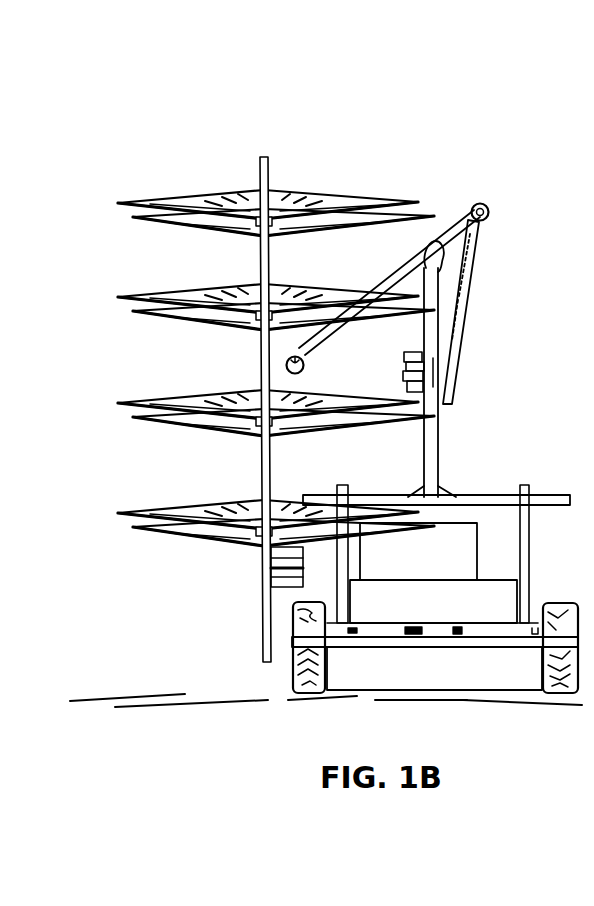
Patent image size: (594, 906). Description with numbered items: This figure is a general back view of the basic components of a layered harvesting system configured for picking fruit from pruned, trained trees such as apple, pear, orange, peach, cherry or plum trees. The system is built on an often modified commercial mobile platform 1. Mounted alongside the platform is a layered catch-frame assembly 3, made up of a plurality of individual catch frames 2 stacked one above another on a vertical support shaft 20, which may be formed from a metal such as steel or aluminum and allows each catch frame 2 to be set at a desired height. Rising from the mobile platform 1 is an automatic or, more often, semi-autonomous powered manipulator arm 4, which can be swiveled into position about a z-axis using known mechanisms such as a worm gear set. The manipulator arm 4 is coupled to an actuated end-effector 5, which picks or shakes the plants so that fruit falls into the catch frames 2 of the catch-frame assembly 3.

The mobile platform 1 is at (504, 555).
The catch frame 2 is at (124, 206).
The catch-frame assembly 3 is at (180, 116).
The manipulator arm 4 is at (492, 194).
The end-effector 5 is at (306, 366).
The vertical support shaft 20 is at (262, 482).